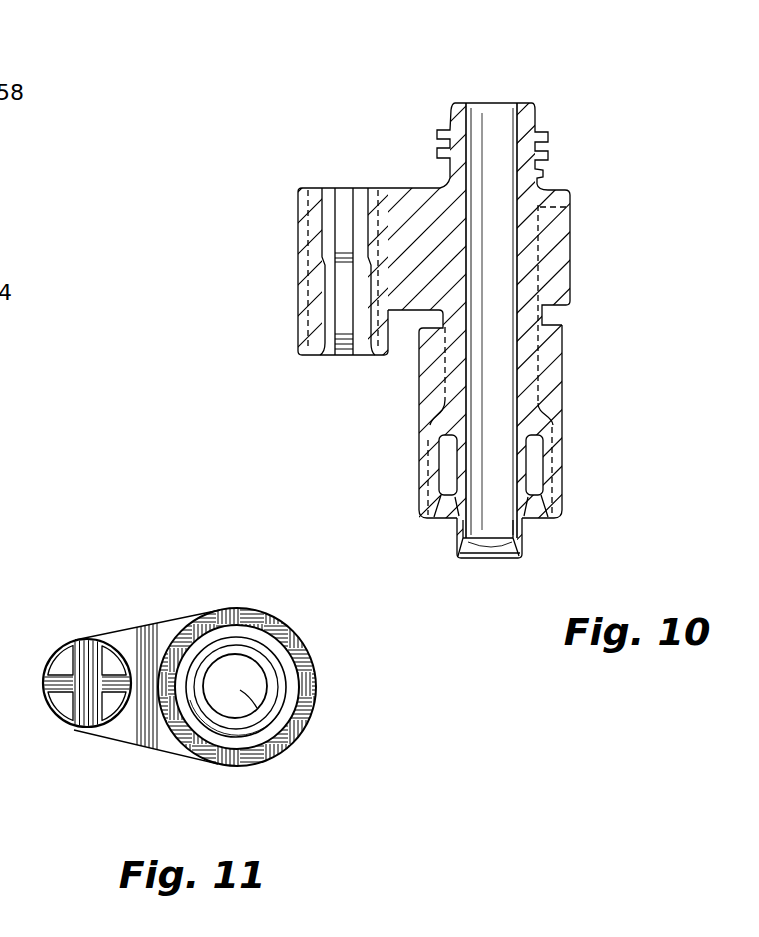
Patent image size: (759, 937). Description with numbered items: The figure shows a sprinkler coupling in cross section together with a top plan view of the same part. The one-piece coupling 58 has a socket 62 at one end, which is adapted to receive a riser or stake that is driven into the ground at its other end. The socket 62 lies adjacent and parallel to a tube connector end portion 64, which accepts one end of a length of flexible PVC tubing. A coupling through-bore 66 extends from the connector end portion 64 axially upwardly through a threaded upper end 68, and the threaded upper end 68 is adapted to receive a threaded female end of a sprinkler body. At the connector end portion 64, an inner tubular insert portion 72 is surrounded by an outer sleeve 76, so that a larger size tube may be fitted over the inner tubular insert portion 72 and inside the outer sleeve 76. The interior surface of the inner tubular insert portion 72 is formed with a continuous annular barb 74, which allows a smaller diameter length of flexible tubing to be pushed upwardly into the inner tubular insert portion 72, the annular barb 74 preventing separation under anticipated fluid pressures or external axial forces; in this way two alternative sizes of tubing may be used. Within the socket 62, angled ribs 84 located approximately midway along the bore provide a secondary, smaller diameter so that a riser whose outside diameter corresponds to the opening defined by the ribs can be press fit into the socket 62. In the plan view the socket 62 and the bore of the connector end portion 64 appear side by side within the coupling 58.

In FIG. 10, the one-piece coupling 58 is at (583, 236).
In FIG. 11, the one-piece coupling 58 is at (184, 600).
In FIG. 10, the socket 62 is at (328, 357).
In FIG. 11, the socket 62 is at (63, 710).
In FIG. 10, the tube connector end portion 64 is at (573, 363).
In FIG. 10, the coupling through-bore 66 is at (465, 125).
In FIG. 11, the coupling through-bore 66 is at (312, 698).
In FIG. 10, the threaded upper end 68 is at (543, 152).
In FIG. 10, the inner tubular insert portion 72 is at (447, 517).
In FIG. 10, the annular barb 74 is at (495, 555).
In FIG. 11, the annular barb 74 is at (207, 750).
In FIG. 10, the outer sleeve 76 is at (548, 468).
In FIG. 10, the angled ribs 84 is at (345, 198).